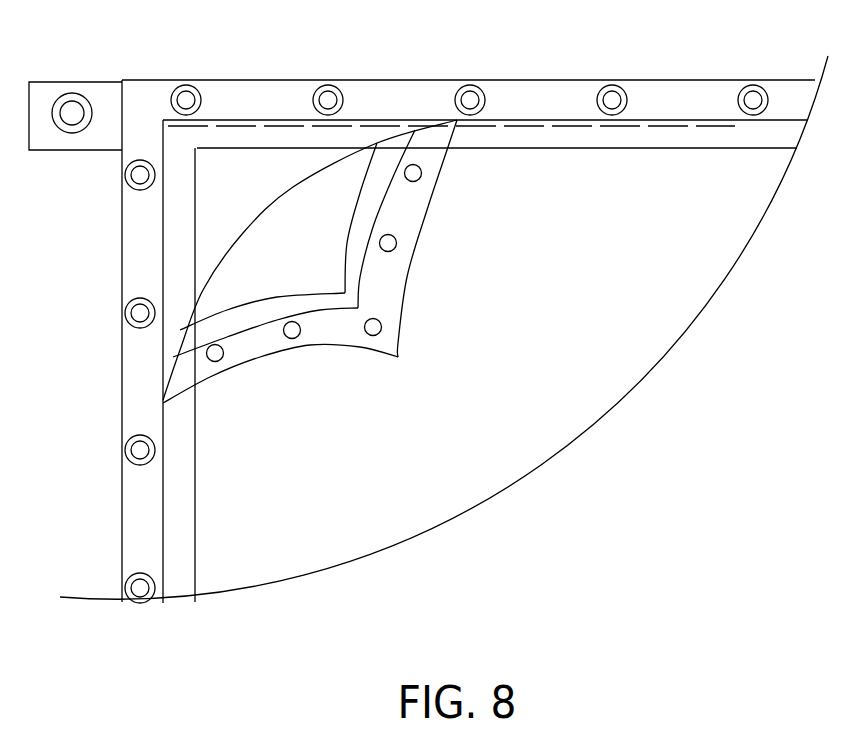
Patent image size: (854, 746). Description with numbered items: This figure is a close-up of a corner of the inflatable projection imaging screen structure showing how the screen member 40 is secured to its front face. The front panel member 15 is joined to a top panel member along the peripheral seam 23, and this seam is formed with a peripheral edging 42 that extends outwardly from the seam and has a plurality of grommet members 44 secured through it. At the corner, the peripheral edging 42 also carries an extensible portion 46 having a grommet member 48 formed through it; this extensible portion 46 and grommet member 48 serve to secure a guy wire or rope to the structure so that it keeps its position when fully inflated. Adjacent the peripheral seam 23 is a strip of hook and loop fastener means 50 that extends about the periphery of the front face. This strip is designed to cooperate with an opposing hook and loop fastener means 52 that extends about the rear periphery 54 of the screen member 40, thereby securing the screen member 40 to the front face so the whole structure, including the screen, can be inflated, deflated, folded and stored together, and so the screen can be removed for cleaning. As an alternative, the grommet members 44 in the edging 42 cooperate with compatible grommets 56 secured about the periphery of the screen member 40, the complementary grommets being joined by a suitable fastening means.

The front panel member 15 is at (320, 206).
The seam 23 is at (405, 120).
The screen member 40 is at (481, 399).
The peripheral edging 42 is at (295, 90).
The grommet members 44 is at (483, 90).
The extensible portion 46 is at (85, 82).
The grommet member 48 is at (55, 105).
The hook and loop fastener means 50 is at (250, 135).
The opposing hook and loop fastener means 52 is at (365, 217).
The rear periphery 54 is at (403, 297).
The compatible grommets 56 is at (396, 247).